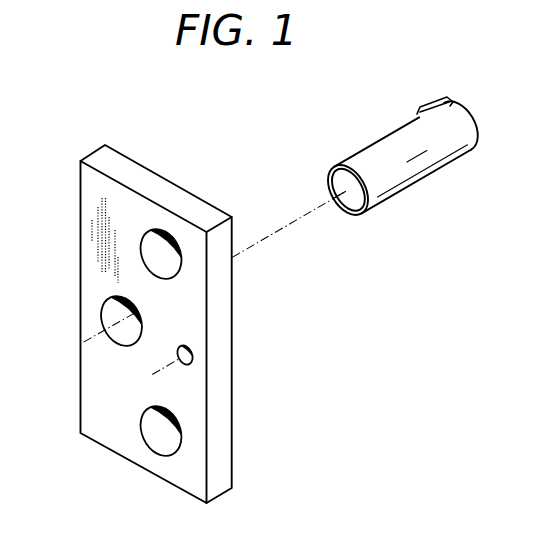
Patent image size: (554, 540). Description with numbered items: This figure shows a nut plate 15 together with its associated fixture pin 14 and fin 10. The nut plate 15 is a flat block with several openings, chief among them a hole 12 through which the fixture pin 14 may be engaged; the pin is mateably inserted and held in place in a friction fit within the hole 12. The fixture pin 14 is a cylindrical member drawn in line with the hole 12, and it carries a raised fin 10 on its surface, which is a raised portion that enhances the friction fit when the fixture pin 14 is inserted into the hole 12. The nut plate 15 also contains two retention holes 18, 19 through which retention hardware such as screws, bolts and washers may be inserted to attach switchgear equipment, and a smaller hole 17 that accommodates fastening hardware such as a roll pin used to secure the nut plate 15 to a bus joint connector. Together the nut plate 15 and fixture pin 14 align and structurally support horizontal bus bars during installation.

The raised fin 10 is at (429, 104).
The hole 12 is at (102, 306).
The fixture pin 14 is at (456, 102).
The nut plate 15 is at (216, 413).
The hole 17 is at (192, 361).
The retention hole 18 is at (165, 280).
The retention hole 19 is at (158, 440).